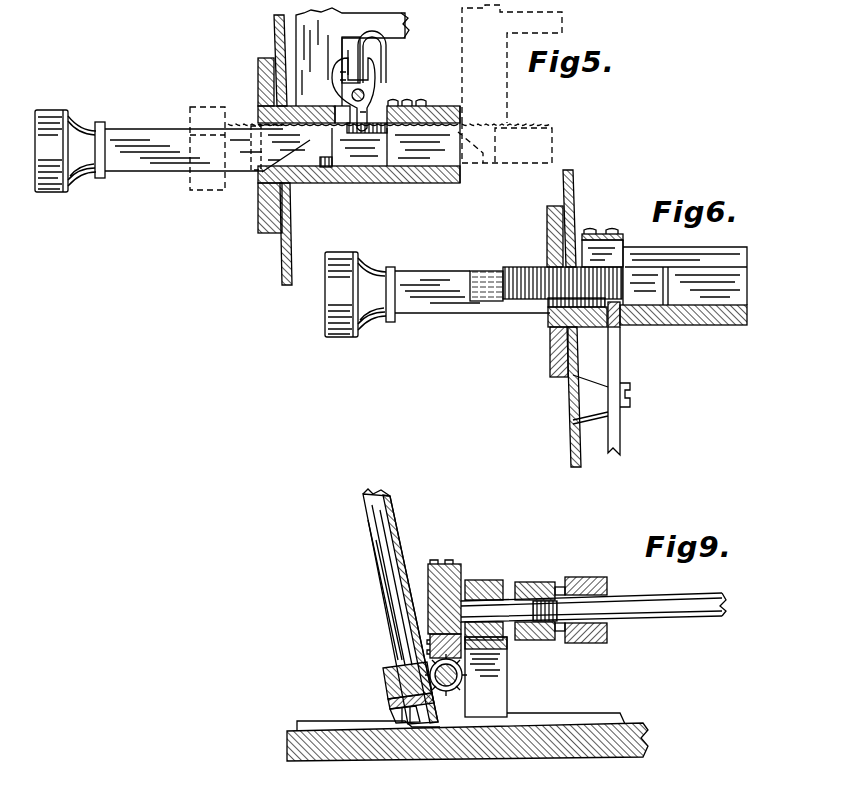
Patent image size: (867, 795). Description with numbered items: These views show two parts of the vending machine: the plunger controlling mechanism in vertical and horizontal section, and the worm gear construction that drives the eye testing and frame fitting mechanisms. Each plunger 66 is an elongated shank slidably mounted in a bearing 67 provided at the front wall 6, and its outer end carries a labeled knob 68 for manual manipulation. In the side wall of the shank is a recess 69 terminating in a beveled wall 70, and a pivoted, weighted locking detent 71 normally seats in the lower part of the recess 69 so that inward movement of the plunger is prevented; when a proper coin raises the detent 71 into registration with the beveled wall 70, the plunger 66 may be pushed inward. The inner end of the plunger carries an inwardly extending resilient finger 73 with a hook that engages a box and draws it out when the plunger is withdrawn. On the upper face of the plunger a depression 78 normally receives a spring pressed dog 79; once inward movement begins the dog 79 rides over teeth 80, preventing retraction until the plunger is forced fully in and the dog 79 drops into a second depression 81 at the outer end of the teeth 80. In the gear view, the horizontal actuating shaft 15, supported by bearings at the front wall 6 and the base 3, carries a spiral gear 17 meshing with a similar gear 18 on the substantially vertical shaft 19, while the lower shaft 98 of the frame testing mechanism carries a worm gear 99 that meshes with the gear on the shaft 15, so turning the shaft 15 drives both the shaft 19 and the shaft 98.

In FIG. 9, the base 3 is at (623, 758).
In FIG. 5, the front wall 6 is at (282, 266).
In FIG. 6, the front wall 6 is at (569, 417).
In FIG. 9, the actuating shaft 15 is at (470, 672).
In FIG. 9, the spiral gear 17 is at (463, 688).
In FIG. 9, the spiral gear 18 is at (385, 687).
In FIG. 9, the vertical shaft 19 is at (392, 602).
In FIG. 5, the plunger 66 is at (182, 163).
In FIG. 6, the plunger 66 is at (507, 312).
In FIG. 5, the bearing 67 is at (258, 87).
In FIG. 6, the bearing 67 is at (548, 235).
In FIG. 5, the knob 68 is at (60, 182).
In FIG. 6, the knob 68 is at (337, 333).
In FIG. 5, the recess 69 is at (325, 183).
In FIG. 6, the recess 69 is at (622, 308).
In FIG. 5, the beveled wall 70 is at (267, 170).
In FIG. 6, the beveled wall 70 is at (553, 327).
In FIG. 6, the locking detent 71 is at (608, 352).
In FIG. 5, the resilient finger 73 is at (405, 25).
In FIG. 5, the depression 78 is at (390, 120).
In FIG. 6, the depression 78 is at (645, 272).
In FIG. 5, the spring pressed dog 79 is at (367, 97).
In FIG. 5, the teeth 80 is at (263, 118).
In FIG. 6, the teeth 80 is at (523, 270).
In FIG. 5, the second depression 81 is at (190, 124).
In FIG. 9, the lower shaft 98 is at (672, 605).
In FIG. 9, the worm gear 99 is at (462, 568).